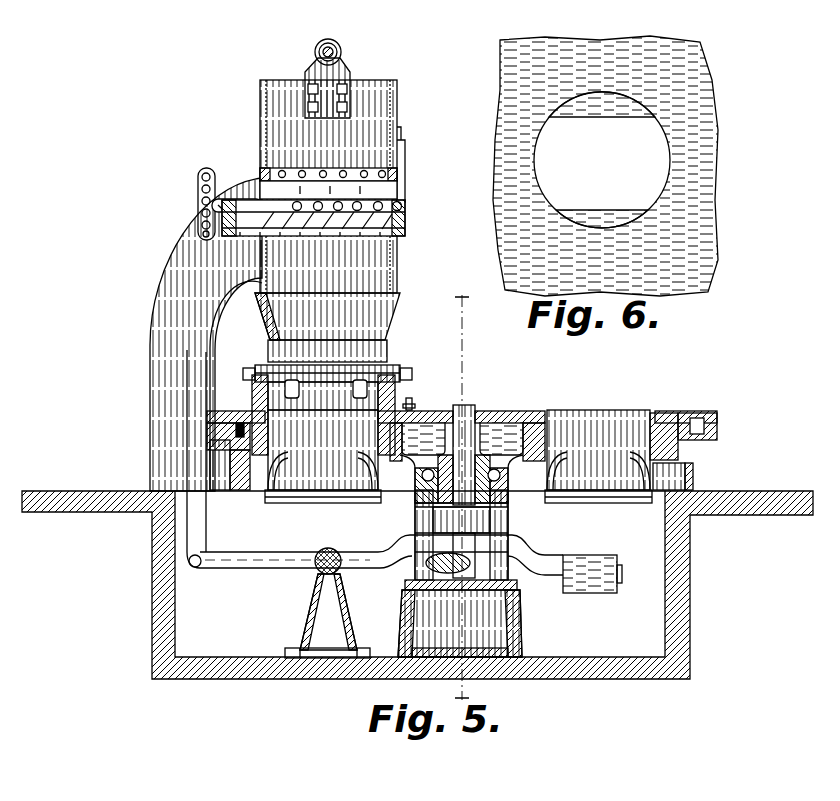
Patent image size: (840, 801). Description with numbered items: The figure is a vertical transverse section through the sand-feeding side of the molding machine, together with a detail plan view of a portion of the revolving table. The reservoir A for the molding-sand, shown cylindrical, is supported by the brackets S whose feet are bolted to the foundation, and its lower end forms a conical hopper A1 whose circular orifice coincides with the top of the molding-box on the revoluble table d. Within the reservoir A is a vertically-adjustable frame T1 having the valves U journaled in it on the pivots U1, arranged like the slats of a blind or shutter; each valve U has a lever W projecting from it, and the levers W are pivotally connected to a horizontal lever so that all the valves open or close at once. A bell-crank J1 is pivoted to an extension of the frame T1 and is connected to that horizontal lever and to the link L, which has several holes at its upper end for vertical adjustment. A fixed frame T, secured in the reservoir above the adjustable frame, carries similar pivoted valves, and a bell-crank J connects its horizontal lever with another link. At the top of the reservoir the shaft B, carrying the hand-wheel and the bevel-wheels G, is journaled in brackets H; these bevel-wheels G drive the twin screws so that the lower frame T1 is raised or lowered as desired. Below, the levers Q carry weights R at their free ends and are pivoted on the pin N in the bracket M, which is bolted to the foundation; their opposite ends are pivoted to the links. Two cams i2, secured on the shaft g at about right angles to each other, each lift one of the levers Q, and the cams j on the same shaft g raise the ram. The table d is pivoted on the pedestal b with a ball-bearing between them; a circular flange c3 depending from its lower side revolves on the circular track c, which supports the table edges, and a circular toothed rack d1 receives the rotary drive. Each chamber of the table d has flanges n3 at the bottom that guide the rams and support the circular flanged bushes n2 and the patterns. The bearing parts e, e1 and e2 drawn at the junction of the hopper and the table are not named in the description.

In FIG. 5, the bevel-wheels G is at (317, 46).
In FIG. 5, the shaft B is at (334, 46).
In FIG. 5, the brackets H is at (330, 78).
In FIG. 5, the reservoir A is at (332, 186).
In FIG. 5, the fixed frame T is at (318, 178).
In FIG. 5, the valves U is at (336, 176).
In FIG. 5, the pivots U1 is at (350, 174).
In FIG. 5, the lever W is at (322, 236).
In FIG. 5, the vertically-adjustable frame T1 is at (296, 249).
In FIG. 5, the bell-crank J is at (206, 204).
In FIG. 5, the bell-crank J1 is at (212, 213).
In FIG. 5, the link L is at (180, 298).
In FIG. 5, the brackets S is at (167, 351).
In FIG. 5, the conical casing bottom A1 is at (327, 327).
In FIG. 5, the bearing cap e1 is at (396, 368).
In FIG. 5, the bearing e is at (398, 386).
In FIG. 5, the bearing bolt e2 is at (414, 405).
In FIG. 5, the circular flanged bushes n2 is at (459, 450).
In FIG. 5, the flanges n3 is at (332, 498).
In FIG. 6, the flanges n3 is at (602, 160).
In FIG. 5, the circular flange c3 is at (240, 452).
In FIG. 5, the circular track c is at (232, 472).
In FIG. 5, the revoluble table d is at (718, 422).
In FIG. 6, the revoluble table d is at (605, 166).
In FIG. 5, the circular toothed rack d1 is at (705, 438).
In FIG. 5, the pedestal b is at (460, 531).
In FIG. 5, the cams i2 is at (446, 573).
In FIG. 5, the shaft g is at (470, 575).
In FIG. 5, the levers Q is at (252, 558).
In FIG. 5, the bracket M is at (325, 617).
In FIG. 5, the pin N is at (340, 573).
In FIG. 5, the weights R is at (592, 574).
In FIG. 5, the cams j is at (579, 338).